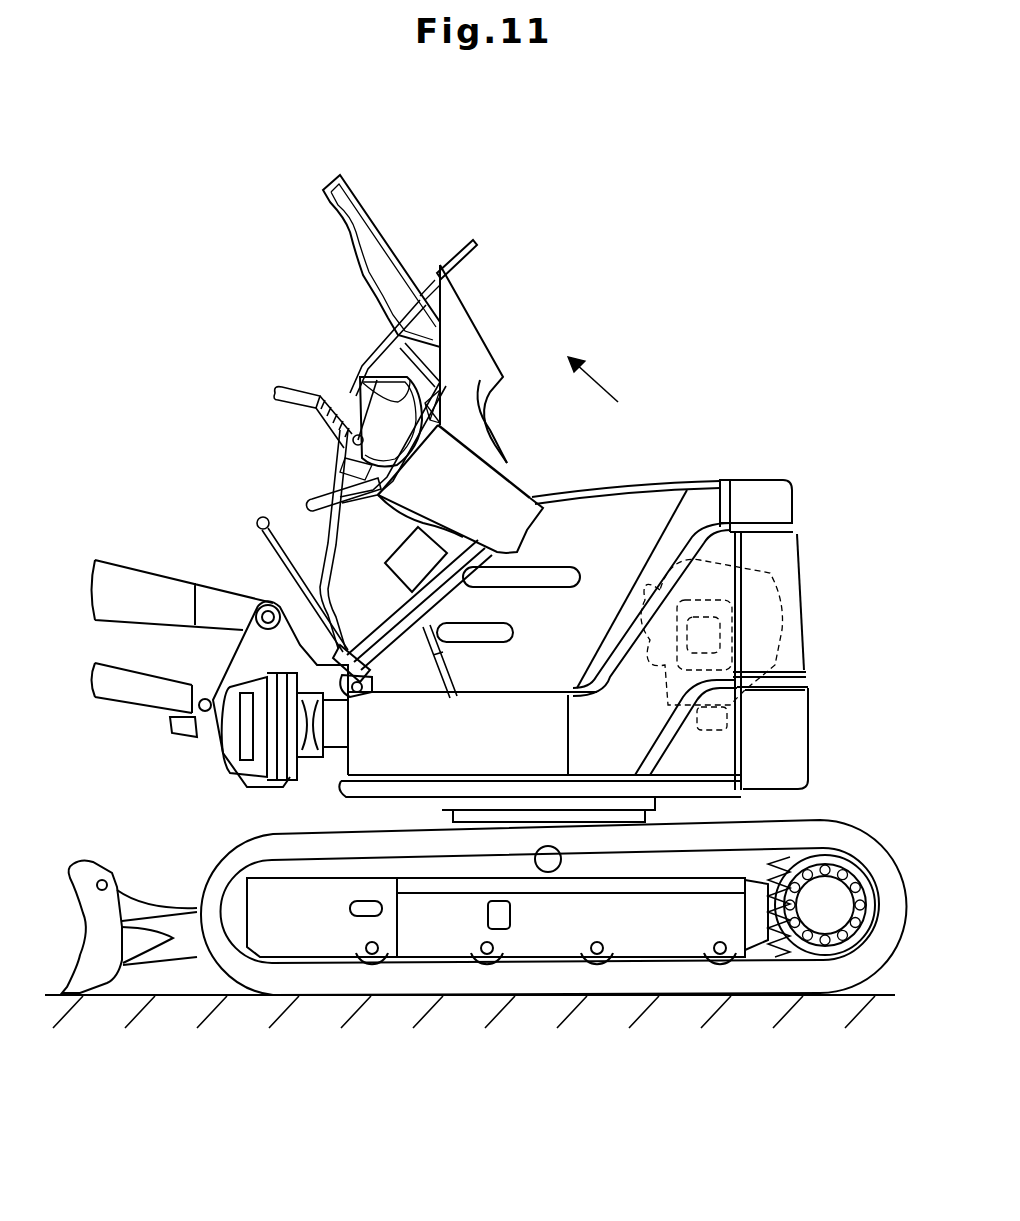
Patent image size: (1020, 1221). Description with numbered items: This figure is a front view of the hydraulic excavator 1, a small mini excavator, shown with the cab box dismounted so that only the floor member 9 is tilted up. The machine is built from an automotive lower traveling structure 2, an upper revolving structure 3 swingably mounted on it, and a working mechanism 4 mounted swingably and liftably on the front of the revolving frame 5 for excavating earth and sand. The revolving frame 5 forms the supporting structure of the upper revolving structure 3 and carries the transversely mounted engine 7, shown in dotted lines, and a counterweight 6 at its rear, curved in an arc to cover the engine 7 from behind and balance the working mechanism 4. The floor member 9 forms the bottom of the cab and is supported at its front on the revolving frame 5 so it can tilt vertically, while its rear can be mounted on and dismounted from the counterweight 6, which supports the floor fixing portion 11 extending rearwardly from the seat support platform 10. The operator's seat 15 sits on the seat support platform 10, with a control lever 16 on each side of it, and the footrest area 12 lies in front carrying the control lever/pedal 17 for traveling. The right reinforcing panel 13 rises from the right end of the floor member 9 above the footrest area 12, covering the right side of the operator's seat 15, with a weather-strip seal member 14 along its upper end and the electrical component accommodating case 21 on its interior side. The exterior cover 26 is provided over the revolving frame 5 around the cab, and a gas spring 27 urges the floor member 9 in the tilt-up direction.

The hydraulic excavator 1 is at (706, 359).
The lower traveling structure 2 is at (548, 930).
The upper revolving structure 3 is at (750, 427).
The working mechanism 4 is at (135, 578).
The revolving frame 5 is at (370, 792).
The counterweight 6 is at (788, 748).
The engine 7 is at (770, 583).
The floor member 9 is at (506, 465).
The seat support platform 10 is at (493, 513).
The floor fixing portion 11 is at (463, 265).
The footrest area 12 is at (478, 590).
The right reinforcing panel 13 is at (388, 337).
The seal member 14 is at (335, 480).
The operator's seat 15 is at (373, 232).
The control lever 16 is at (277, 390).
The control lever/pedal 17 is at (257, 530).
The electrical component accommodating case 21 is at (405, 560).
The exterior cover 26 is at (652, 482).
The gas spring 27 is at (447, 650).